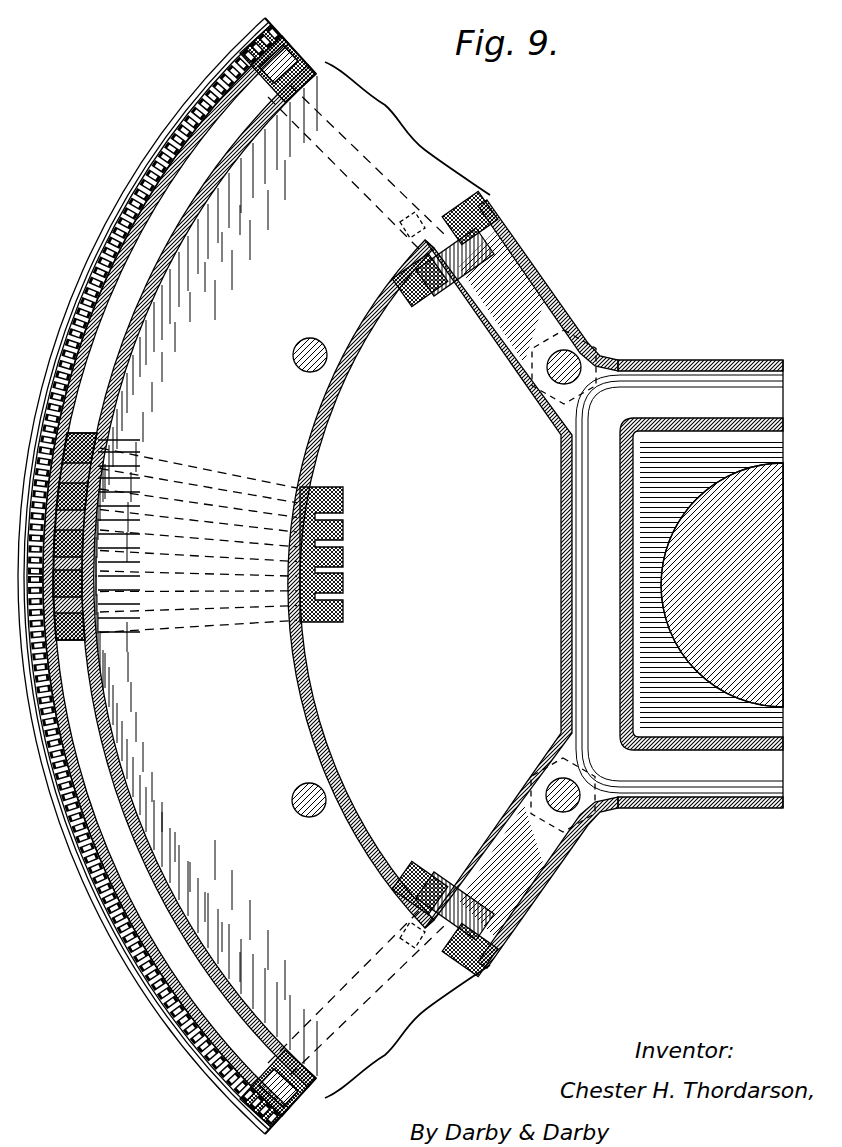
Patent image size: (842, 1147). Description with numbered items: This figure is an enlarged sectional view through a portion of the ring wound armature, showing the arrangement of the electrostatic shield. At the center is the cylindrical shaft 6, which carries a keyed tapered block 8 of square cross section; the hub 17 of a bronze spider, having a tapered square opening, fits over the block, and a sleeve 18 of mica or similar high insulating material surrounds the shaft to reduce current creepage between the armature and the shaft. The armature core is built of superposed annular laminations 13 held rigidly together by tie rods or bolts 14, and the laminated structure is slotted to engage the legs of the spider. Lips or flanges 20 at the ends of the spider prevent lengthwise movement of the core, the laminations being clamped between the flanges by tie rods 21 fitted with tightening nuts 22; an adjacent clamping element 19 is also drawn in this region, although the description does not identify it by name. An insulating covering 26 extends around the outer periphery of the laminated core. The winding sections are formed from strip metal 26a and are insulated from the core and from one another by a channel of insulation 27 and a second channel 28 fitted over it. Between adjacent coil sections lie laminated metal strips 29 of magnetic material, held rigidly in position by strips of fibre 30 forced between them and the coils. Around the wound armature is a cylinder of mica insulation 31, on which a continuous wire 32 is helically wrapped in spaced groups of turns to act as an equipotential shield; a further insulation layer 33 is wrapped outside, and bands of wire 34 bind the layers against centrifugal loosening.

The cylindrical shaft 6 is at (760, 618).
The tapered block 8 is at (770, 728).
The annular laminations 13 is at (355, 135).
The tie rods or bolts 14 is at (328, 357).
The hub 17 is at (738, 382).
The insulating sleeve 18 is at (623, 480).
The clamp 19 is at (462, 288).
The lips or flanges 20 is at (480, 190).
The tie rods 21 is at (580, 810).
The tightening nuts 22 is at (540, 766).
The insulating covering 26 is at (195, 217).
The strip metal winding sections 26a is at (350, 461).
The insulating covering channel 27 is at (117, 437).
The insulating channel 28 is at (62, 395).
The laminated metal strips 29 is at (97, 558).
The fibre strips 30 is at (77, 637).
The insulation layer 31 is at (112, 948).
The wire shield 32 is at (77, 863).
The insulation layer 33 is at (97, 275).
The wire bands 34 is at (115, 228).